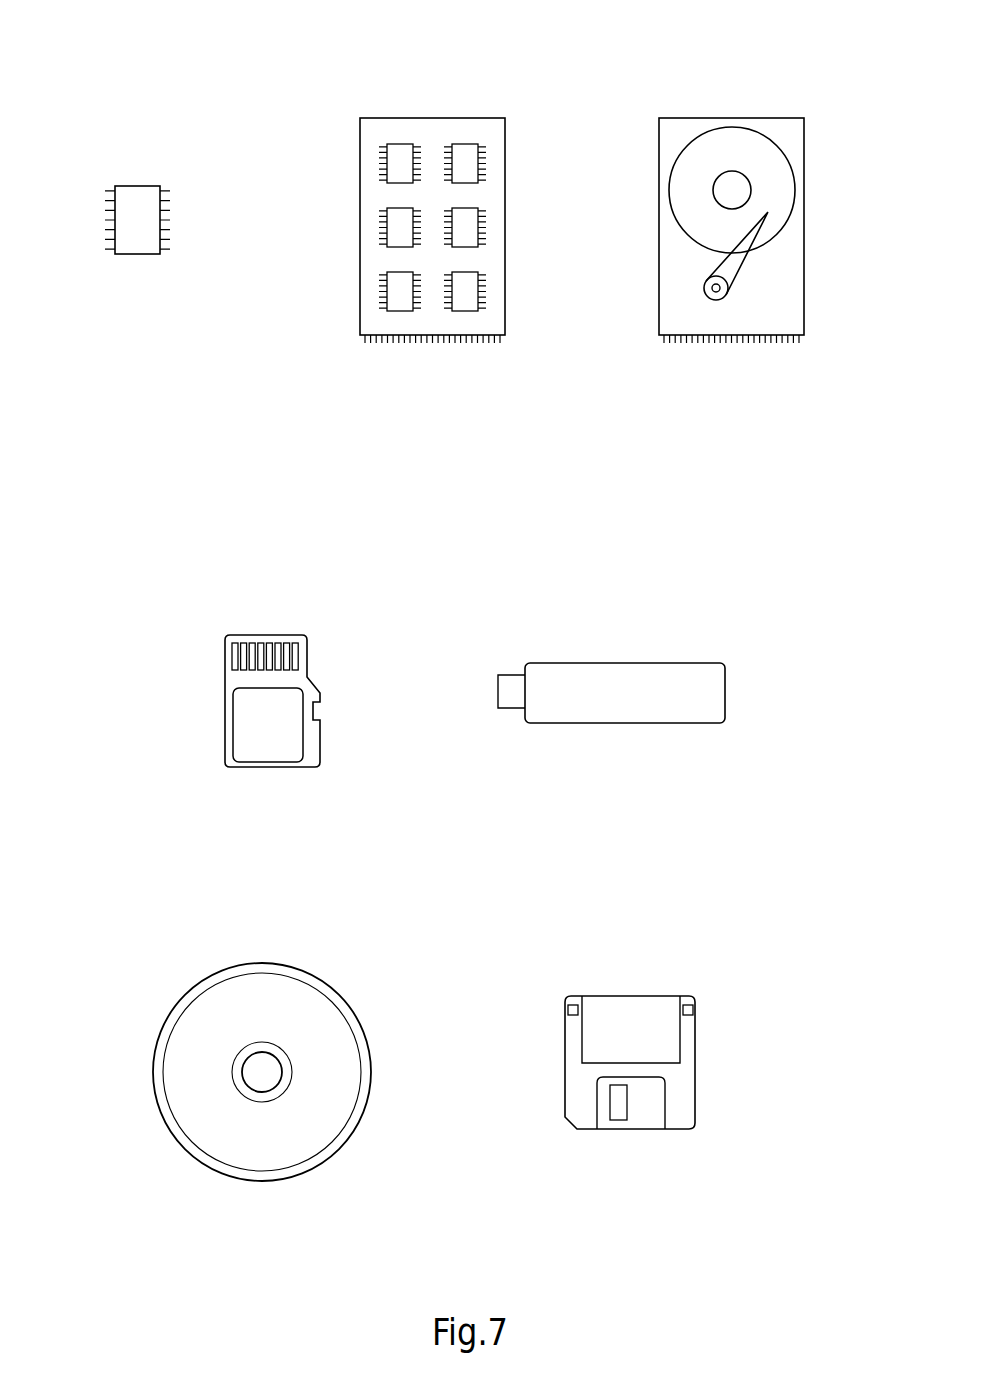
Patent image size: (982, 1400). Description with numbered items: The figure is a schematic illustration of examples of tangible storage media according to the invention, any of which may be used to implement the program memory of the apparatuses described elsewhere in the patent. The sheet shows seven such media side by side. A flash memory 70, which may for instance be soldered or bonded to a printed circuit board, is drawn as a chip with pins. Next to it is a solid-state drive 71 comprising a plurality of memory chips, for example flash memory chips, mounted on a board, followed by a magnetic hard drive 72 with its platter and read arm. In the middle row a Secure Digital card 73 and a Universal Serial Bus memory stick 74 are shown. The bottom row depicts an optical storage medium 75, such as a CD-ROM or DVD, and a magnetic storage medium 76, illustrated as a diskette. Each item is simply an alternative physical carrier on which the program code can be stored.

The flash memory 70 is at (164, 145).
The solid-state drive 71 is at (508, 78).
The magnetic hard drive 72 is at (807, 78).
The Secure Digital (SD) card 73 is at (310, 600).
The Universal Serial Bus (USB) memory stick 74 is at (698, 622).
The optical storage medium 75 is at (350, 955).
The magnetic storage medium 76 is at (692, 955).